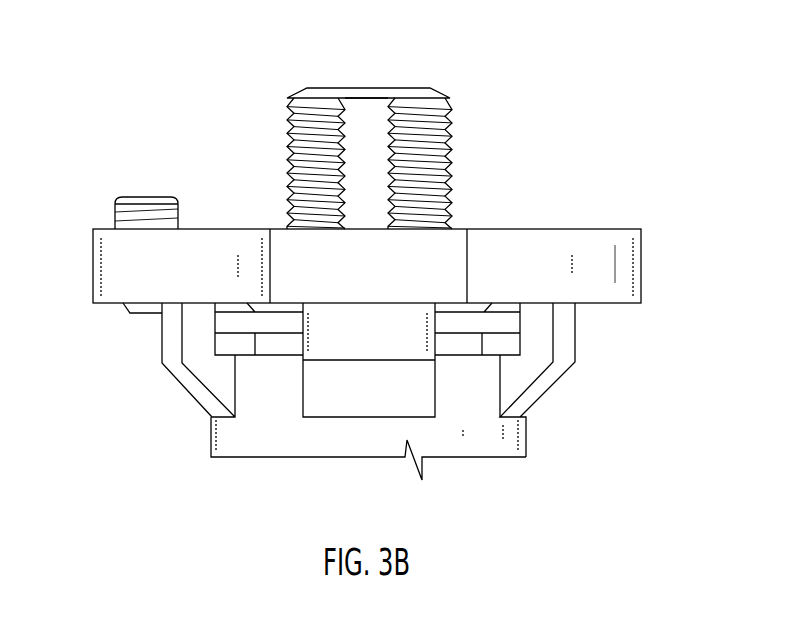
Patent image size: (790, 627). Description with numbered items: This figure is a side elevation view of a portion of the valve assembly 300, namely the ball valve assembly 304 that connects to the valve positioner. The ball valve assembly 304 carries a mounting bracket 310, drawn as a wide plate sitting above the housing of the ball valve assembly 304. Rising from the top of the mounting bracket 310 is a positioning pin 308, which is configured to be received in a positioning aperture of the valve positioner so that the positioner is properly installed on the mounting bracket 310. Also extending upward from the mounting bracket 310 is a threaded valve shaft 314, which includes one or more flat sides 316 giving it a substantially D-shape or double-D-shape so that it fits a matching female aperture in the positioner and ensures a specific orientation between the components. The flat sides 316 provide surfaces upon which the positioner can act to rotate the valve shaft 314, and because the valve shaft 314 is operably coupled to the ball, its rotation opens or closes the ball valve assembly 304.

The valve assembly 300 is at (79, 121).
The ball valve assembly 304 is at (477, 458).
The positioning pin 308 is at (157, 196).
The mounting bracket 310 is at (535, 250).
The valve shaft 314 is at (320, 100).
The flat sides 316 is at (369, 118).